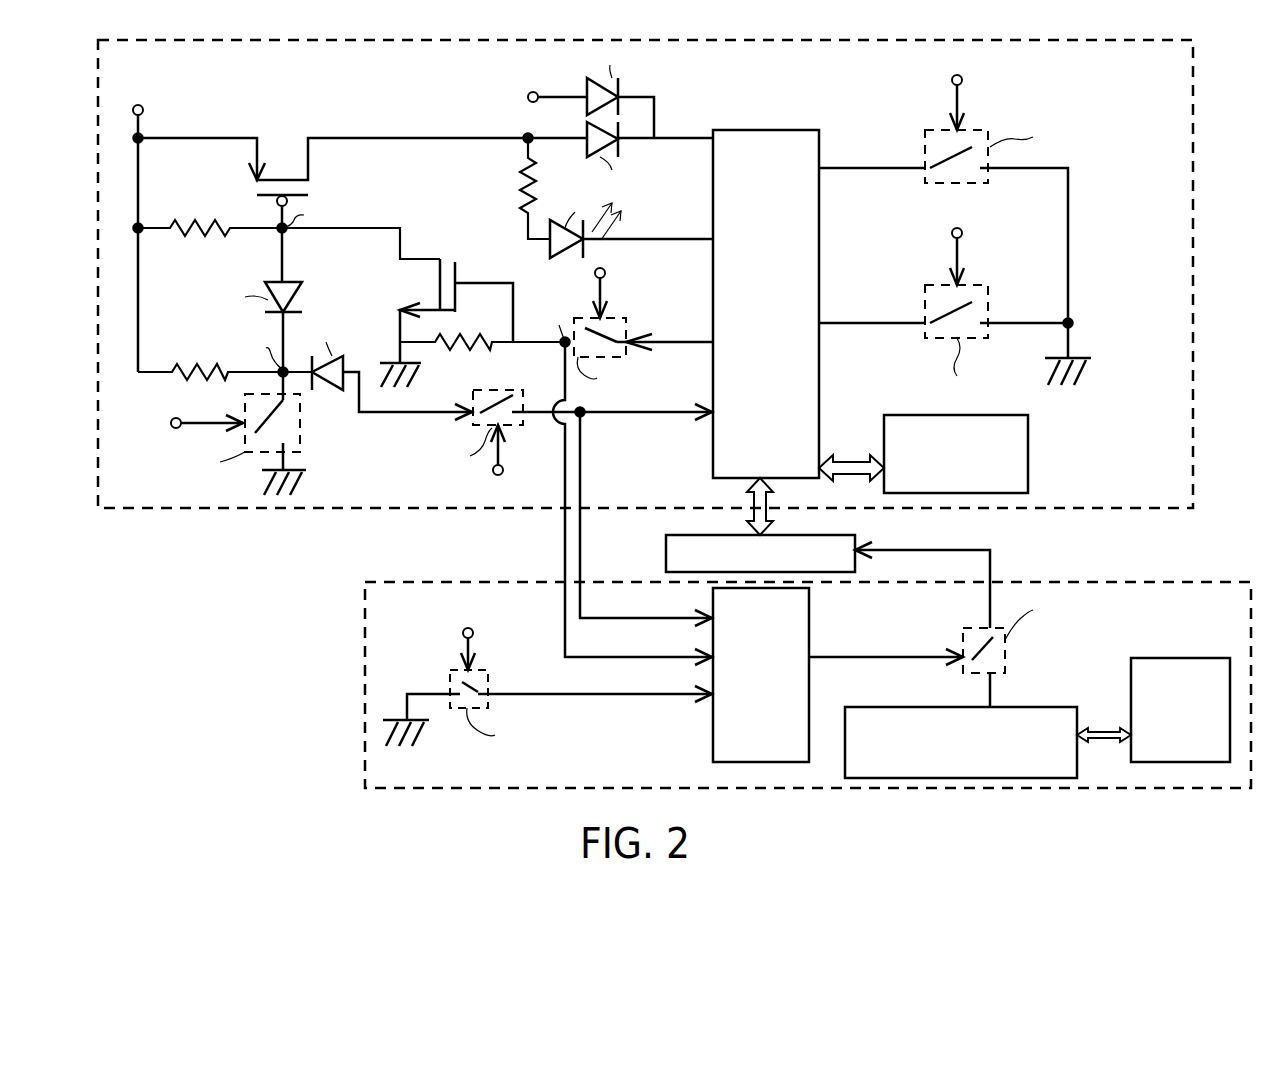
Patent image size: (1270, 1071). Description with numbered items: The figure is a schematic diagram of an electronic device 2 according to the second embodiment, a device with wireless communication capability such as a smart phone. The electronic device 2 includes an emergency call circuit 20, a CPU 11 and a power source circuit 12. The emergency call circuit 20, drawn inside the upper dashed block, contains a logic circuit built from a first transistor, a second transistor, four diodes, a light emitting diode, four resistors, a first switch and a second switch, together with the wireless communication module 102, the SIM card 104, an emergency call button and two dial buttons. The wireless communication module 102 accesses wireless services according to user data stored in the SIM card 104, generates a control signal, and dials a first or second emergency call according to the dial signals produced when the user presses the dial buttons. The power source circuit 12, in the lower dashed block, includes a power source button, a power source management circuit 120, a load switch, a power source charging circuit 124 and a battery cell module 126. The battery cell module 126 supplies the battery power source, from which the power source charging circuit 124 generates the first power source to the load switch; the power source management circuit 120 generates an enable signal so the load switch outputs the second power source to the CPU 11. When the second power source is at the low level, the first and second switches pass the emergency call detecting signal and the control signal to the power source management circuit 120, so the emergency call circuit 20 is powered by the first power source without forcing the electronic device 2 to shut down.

The electronic device 2 is at (218, 760).
The emergency call circuit 20 is at (214, 509).
The power source circuit 12 is at (365, 650).
The CPU 11 is at (666, 550).
The wireless communication module 102 is at (762, 130).
The SIM card 104 is at (1028, 455).
The power source management circuit 120 is at (760, 762).
The power source charging circuit 124 is at (967, 778).
The battery cell module 126 is at (1175, 762).